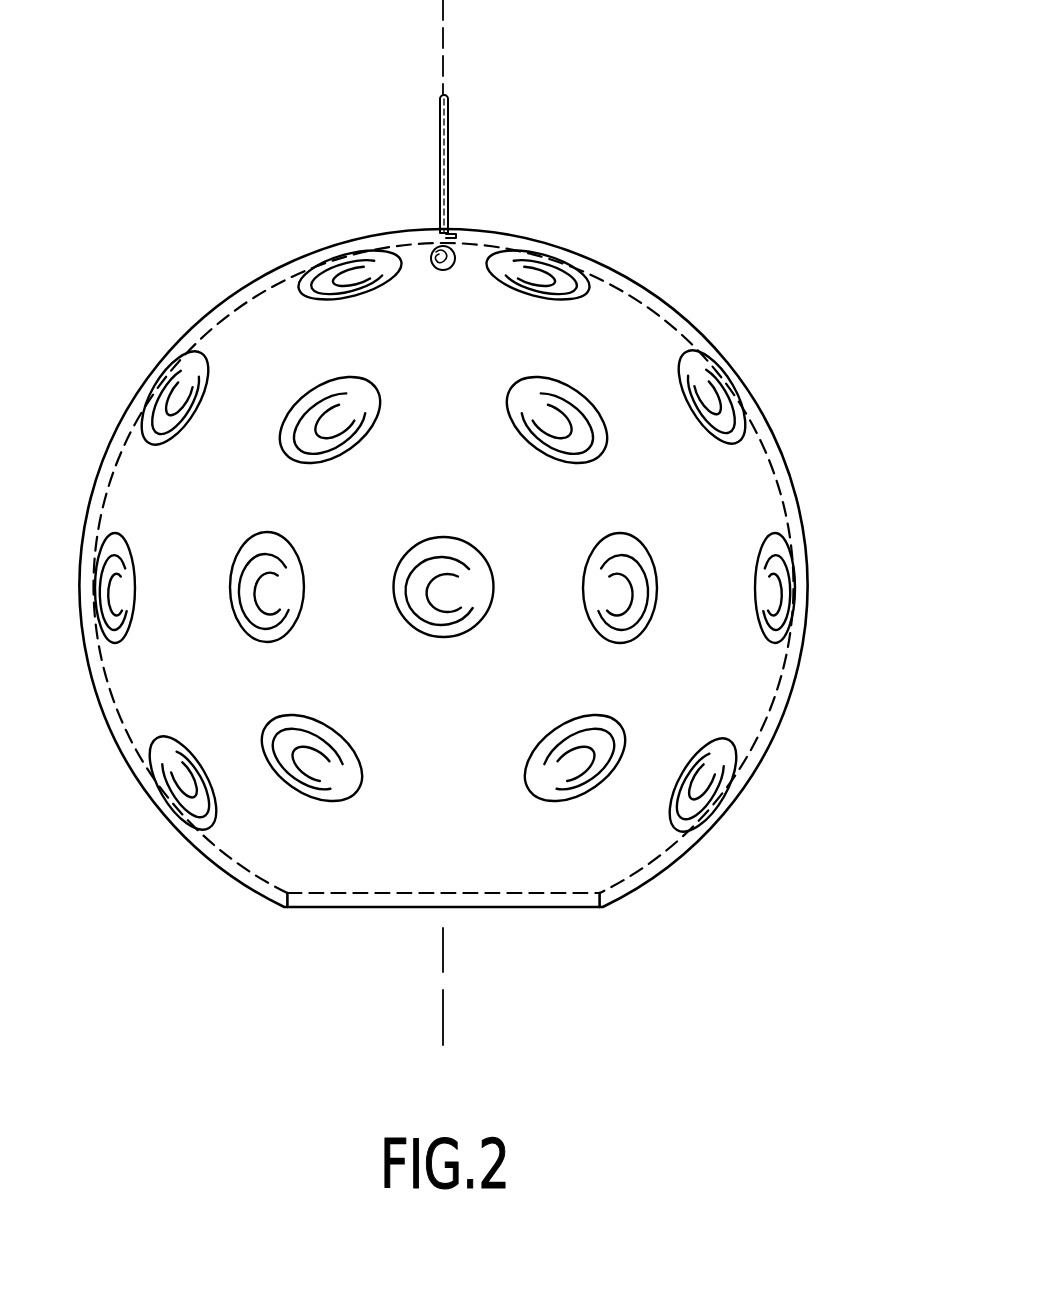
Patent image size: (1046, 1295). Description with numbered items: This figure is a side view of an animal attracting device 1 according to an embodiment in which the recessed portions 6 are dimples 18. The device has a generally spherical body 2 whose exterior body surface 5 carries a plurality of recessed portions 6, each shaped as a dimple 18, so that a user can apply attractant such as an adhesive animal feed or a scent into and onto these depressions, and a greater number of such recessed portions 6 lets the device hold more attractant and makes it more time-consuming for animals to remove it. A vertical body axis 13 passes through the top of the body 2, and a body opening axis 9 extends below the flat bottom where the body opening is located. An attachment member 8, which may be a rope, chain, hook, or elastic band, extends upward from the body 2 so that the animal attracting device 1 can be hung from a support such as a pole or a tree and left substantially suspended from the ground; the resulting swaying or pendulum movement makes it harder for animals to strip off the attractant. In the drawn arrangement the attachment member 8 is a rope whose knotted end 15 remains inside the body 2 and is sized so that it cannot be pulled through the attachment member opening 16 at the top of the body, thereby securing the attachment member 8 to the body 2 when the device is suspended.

The animal attracting device 1 is at (190, 220).
The body 2 is at (765, 687).
The exterior body surface 5 is at (701, 324).
The recessed portion 6 is at (496, 541).
The attachment member 8 is at (448, 153).
The body opening axis 9 is at (443, 983).
The body axis 13 is at (443, 12).
The knotted end 15 is at (443, 271).
The attachment member opening 16 is at (456, 238).
The dimple 18 is at (176, 366).